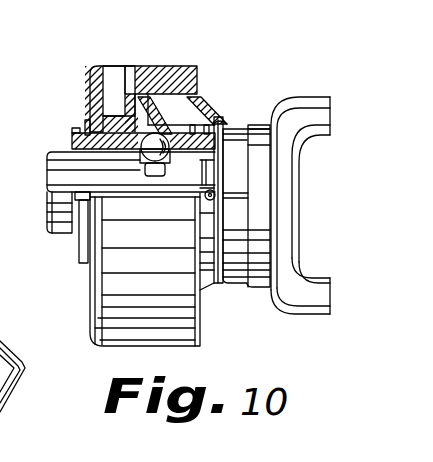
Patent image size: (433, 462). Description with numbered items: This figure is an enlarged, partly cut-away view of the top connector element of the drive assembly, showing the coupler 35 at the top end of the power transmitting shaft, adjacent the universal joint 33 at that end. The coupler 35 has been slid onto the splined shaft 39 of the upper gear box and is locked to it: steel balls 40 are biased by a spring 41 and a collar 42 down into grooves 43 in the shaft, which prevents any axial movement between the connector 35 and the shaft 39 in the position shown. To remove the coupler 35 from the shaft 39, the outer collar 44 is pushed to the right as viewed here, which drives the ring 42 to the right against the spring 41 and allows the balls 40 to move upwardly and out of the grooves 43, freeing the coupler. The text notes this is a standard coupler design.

The universal joint 33 is at (318, 278).
The coupler 35 is at (218, 72).
The splined shaft 39 is at (62, 160).
The steel balls 40 is at (130, 138).
The spring 41 is at (216, 124).
The collar 42 is at (146, 144).
The grooves 43 is at (135, 175).
The collar 44 is at (135, 328).